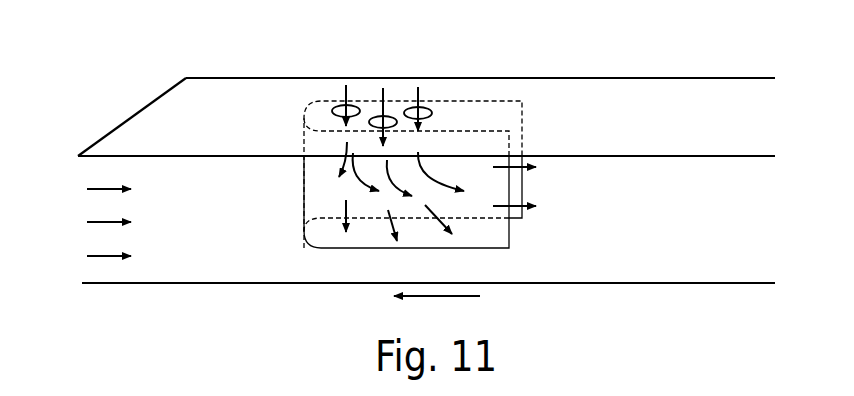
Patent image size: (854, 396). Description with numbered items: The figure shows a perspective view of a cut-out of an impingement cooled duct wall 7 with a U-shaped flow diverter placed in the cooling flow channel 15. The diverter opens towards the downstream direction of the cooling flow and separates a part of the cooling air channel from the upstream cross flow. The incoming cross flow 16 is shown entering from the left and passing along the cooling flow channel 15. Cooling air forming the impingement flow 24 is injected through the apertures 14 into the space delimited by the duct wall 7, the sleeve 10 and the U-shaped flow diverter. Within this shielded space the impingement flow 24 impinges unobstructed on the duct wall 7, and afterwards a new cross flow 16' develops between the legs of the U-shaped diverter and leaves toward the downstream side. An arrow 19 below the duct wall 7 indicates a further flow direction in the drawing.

The sleeve 10 is at (595, 78).
The cooling flow channel 15 is at (210, 200).
The duct wall 7 is at (601, 283).
The apertures 14 is at (407, 110).
The impingement flow 24 is at (418, 97).
The cross flow 16 is at (125, 222).
The new cross flow 16' is at (532, 186).
The return flow 19 is at (437, 309).